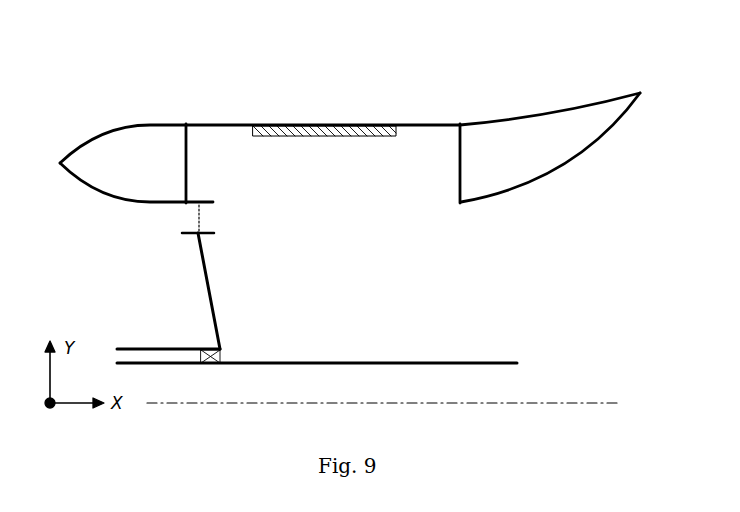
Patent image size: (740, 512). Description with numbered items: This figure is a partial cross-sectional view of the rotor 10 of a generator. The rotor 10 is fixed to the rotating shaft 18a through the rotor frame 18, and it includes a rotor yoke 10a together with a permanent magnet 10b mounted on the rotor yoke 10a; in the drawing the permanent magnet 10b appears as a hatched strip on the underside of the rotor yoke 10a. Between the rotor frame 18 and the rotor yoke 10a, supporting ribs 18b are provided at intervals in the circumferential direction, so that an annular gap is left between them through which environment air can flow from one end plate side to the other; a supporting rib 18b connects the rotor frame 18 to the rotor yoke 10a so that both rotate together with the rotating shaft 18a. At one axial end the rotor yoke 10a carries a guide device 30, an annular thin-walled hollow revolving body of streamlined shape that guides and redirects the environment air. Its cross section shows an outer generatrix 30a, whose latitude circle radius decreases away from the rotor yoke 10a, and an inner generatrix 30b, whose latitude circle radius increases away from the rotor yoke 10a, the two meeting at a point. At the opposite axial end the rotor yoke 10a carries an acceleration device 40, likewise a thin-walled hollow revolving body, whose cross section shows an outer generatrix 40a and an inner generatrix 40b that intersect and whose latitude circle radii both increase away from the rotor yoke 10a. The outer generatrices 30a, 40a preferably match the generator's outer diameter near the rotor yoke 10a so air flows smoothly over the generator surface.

The rotor 10 is at (381, 31).
The rotor yoke 10a is at (222, 124).
The permanent magnet 10b is at (366, 128).
The rotor frame 18 is at (210, 283).
The rotating shaft 18a is at (163, 347).
The supporting rib 18b is at (197, 210).
The guide device 30 is at (130, 150).
The outer generatrix 30a is at (165, 122).
The inner generatrix 30b is at (112, 193).
The acceleration device 40 is at (503, 135).
The outer generatrix 40a is at (572, 105).
The inner generatrix 40b is at (512, 188).